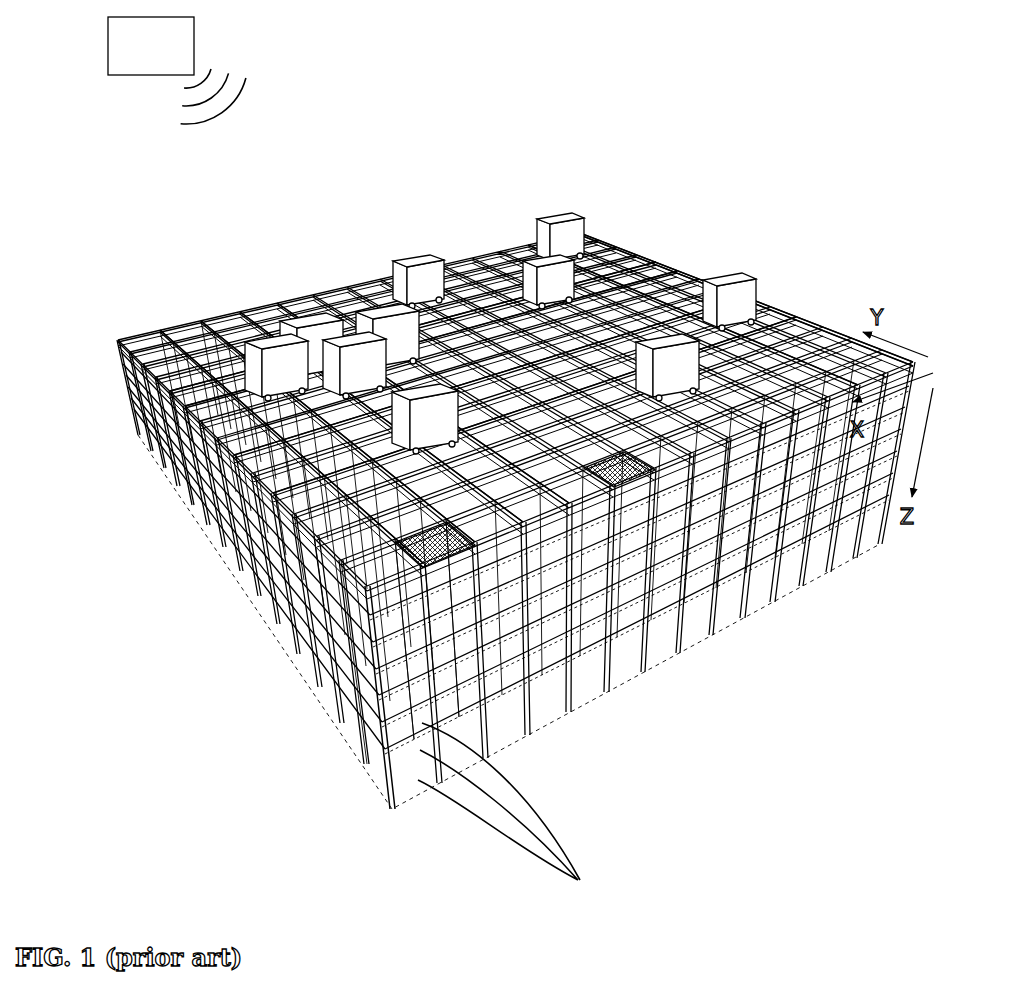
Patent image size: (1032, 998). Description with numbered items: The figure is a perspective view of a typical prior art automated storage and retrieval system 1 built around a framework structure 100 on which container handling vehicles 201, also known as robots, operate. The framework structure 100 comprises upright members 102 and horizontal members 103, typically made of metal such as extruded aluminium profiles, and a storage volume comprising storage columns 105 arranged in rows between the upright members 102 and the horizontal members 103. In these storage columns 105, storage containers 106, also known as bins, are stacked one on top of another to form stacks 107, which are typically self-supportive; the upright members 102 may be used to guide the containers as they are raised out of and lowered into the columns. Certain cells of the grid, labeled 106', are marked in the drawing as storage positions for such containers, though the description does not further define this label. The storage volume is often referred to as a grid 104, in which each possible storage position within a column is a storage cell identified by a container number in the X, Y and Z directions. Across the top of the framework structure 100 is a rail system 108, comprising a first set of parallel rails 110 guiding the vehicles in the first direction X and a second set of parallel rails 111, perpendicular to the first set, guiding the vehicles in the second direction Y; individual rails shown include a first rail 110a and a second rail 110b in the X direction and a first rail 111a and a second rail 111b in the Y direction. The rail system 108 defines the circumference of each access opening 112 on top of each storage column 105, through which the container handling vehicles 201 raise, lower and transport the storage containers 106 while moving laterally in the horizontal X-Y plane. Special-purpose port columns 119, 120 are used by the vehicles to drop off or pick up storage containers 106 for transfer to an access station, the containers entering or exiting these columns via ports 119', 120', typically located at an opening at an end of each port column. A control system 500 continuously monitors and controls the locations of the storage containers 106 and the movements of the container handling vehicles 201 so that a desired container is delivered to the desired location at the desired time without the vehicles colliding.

The automated storage and retrieval system 1 is at (460, 140).
The framework structure 100 is at (128, 495).
The upright members 102 is at (370, 693).
The horizontal members 103 is at (785, 660).
The grid 104 is at (118, 348).
The storage columns 105 is at (290, 598).
The storage containers 106 is at (514, 710).
The stacks of storage containers 106' is at (407, 632).
The stacks 107 is at (797, 580).
The rail system 108 is at (847, 342).
The first set of parallel rails 110 is at (795, 357).
The first rail in a first direction X 110a is at (248, 312).
The second rail in a first direction X 110b is at (260, 310).
The second set of parallel rails 111 is at (172, 330).
The first rail in a second direction Y 111a is at (208, 320).
The second rail in a second direction Y 111b is at (270, 322).
The access openings 112 is at (752, 335).
The port column 119 is at (589, 669).
The port 119' is at (660, 575).
The port column 120 is at (690, 630).
The port 120' is at (735, 552).
The container handling vehicles 201 is at (578, 228).
The control system 500 is at (177, 70).